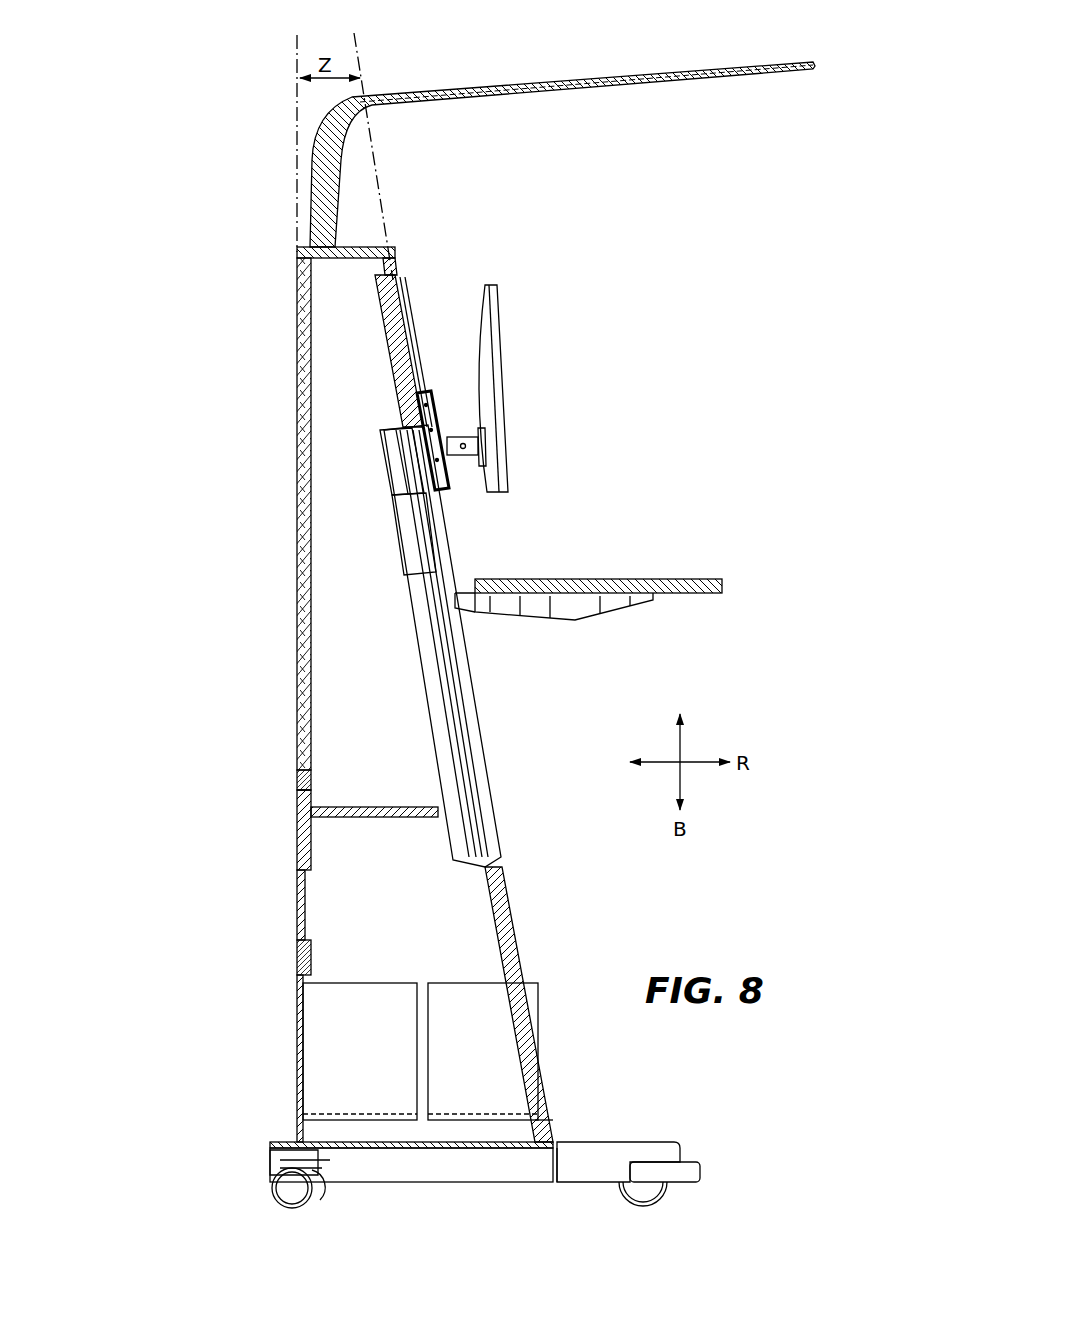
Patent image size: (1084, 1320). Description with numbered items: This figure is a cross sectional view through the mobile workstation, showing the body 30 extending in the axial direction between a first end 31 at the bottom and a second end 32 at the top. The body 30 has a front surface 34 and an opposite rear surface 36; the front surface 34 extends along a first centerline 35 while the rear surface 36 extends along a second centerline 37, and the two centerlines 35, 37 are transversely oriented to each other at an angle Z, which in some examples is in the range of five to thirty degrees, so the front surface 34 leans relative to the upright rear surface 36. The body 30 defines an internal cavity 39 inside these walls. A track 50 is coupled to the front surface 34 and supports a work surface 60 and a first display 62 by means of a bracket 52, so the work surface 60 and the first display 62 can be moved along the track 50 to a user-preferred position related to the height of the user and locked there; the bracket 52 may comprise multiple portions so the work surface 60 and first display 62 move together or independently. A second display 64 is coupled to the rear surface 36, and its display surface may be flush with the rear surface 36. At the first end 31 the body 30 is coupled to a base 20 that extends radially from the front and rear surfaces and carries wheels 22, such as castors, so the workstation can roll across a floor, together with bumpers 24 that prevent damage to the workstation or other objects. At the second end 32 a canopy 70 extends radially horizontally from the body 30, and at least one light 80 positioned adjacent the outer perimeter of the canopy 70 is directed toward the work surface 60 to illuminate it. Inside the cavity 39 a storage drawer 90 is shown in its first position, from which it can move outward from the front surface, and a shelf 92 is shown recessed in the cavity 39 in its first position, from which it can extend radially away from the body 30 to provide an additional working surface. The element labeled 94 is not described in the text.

The base 20 is at (610, 1170).
The wheels 22 is at (290, 1201).
The bumpers 24 is at (690, 1178).
The body 30 is at (458, 700).
The first end 31 is at (459, 1172).
The second end 32 is at (509, 143).
The front surface 34 is at (516, 970).
The first centerline 35 is at (366, 92).
The rear surface 36 is at (297, 778).
The second centerline 37 is at (297, 108).
The internal cavity 39 is at (410, 940).
The track 50 is at (468, 747).
The bracket 52 is at (470, 560).
The work surface 60 is at (665, 580).
The first display 62 is at (508, 385).
The second display 64 is at (297, 580).
The canopy 70 is at (562, 129).
The light 80 is at (600, 92).
The storage drawer 90 is at (297, 1060).
The shelf 92 is at (297, 808).
The lower wall panel 94 is at (297, 905).